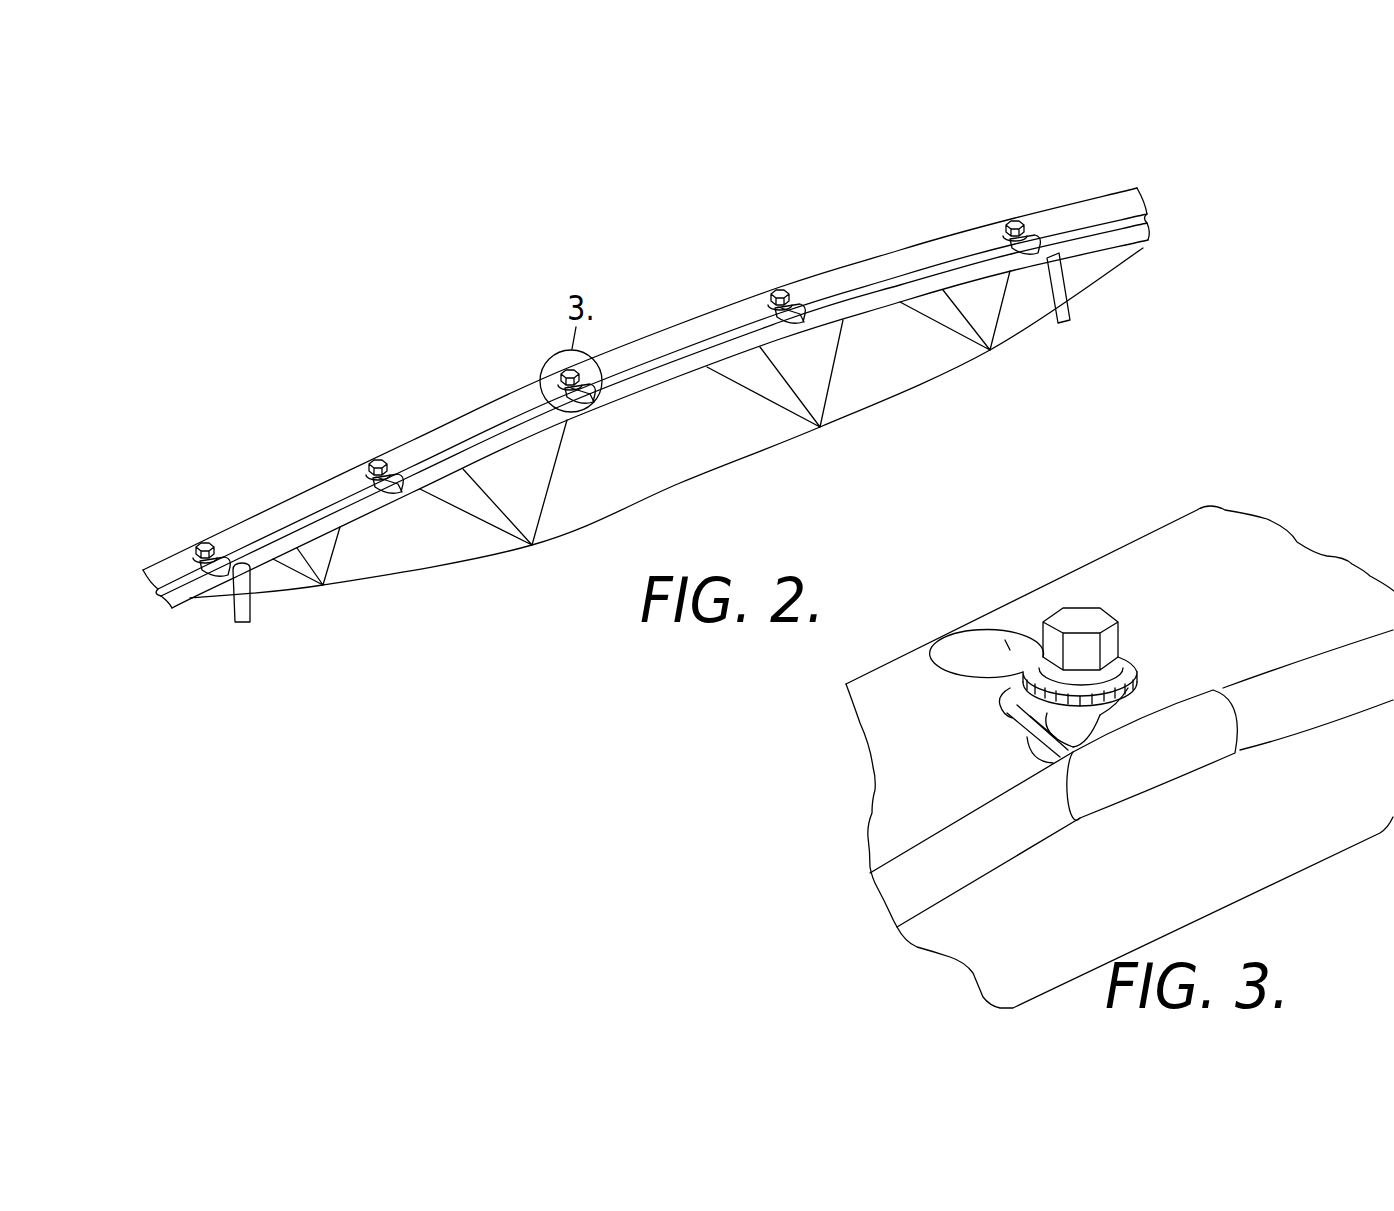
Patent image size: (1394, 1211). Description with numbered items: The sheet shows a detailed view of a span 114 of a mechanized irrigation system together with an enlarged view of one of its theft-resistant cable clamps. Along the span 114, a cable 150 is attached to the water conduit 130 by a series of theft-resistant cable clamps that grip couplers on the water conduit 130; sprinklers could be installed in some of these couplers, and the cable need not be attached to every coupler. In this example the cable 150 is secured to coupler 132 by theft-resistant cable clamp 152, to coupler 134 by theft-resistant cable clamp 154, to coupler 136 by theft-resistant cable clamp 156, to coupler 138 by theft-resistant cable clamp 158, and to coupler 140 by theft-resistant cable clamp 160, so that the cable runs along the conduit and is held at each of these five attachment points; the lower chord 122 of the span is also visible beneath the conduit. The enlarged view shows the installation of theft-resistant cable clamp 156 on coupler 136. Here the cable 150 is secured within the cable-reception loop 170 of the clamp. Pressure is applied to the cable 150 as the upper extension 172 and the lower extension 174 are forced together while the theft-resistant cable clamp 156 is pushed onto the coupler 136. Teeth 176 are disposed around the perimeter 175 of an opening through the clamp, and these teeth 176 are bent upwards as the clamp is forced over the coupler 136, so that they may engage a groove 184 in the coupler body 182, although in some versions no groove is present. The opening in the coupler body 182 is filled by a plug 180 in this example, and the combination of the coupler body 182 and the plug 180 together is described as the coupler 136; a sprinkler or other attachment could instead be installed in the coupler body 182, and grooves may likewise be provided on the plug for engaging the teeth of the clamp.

In FIG. 2, the span 114 is at (626, 304).
In FIG. 2, the lower chord of boom truss 122 is at (482, 553).
In FIG. 2, the water conduit 130 is at (680, 384).
In FIG. 2, the coupler 132 is at (205, 543).
In FIG. 2, the coupler 134 is at (377, 458).
In FIG. 2, the coupler 136 is at (565, 369).
In FIG. 3, the coupler 136 is at (1001, 626).
In FIG. 2, the coupler 138 is at (778, 289).
In FIG. 2, the coupler 140 is at (1013, 220).
In FIG. 2, the cable 150 is at (912, 268).
In FIG. 3, the cable 150 is at (1337, 662).
In FIG. 2, the theft-resistant cable clamp 152 is at (223, 572).
In FIG. 2, the theft-resistant cable clamp 154 is at (396, 486).
In FIG. 2, the theft-resistant cable clamp 156 is at (580, 394).
In FIG. 3, the theft-resistant cable clamp 156 is at (1030, 716).
In FIG. 2, the theft-resistant cable clamp 158 is at (808, 316).
In FIG. 2, the theft-resistant cable clamp 160 is at (1027, 245).
In FIG. 3, the cable-reception loop 170 is at (1167, 767).
In FIG. 3, the upper extension 172 is at (1010, 680).
In FIG. 3, the lower extension 174 is at (1000, 684).
In FIG. 3, the perimeter 175 is at (1100, 713).
In FIG. 3, the teeth 176 is at (1048, 758).
In FIG. 3, the plug 180 is at (1082, 618).
In FIG. 3, the coupler body 182 is at (1125, 677).
In FIG. 3, the groove 184 is at (1010, 675).